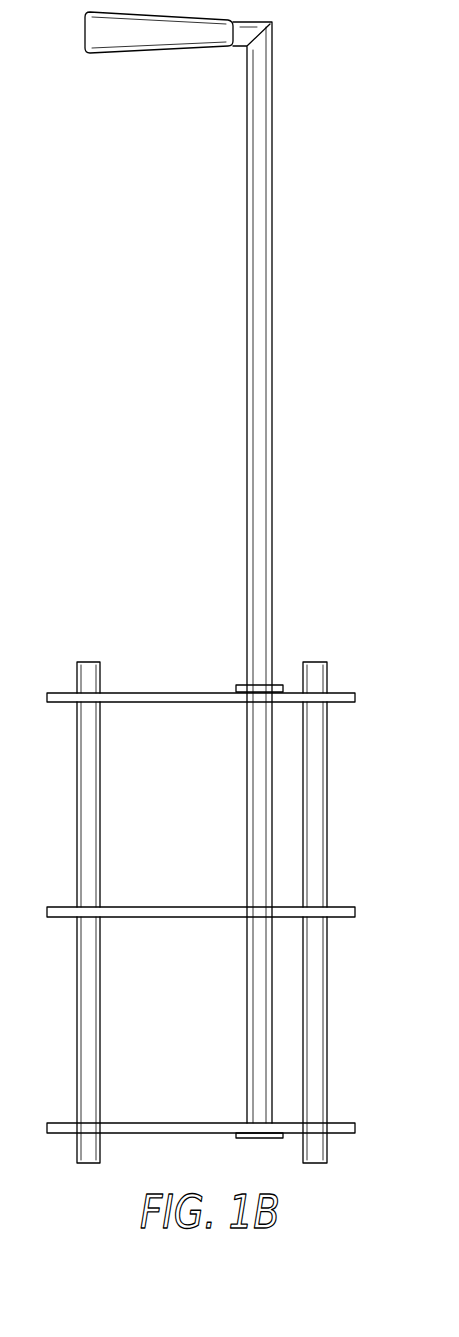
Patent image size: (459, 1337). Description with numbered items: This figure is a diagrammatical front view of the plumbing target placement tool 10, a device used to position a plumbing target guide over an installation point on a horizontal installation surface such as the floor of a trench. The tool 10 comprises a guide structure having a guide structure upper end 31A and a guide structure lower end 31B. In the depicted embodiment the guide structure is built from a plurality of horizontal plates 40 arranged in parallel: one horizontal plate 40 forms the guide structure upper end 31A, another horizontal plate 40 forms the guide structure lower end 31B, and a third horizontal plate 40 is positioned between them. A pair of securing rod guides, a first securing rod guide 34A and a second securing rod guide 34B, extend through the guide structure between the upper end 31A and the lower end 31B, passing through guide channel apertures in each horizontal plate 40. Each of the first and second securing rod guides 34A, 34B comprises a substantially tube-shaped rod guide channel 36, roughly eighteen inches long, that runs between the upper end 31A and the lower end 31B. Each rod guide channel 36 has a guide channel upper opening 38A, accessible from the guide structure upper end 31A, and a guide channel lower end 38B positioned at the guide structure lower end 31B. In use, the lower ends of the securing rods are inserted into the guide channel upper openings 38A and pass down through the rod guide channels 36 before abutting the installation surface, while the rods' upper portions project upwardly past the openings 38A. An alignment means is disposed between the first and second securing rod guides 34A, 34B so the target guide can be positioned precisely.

The plumbing target placement tool 10 is at (202, 587).
The guide structure upper end 31A is at (132, 658).
The guide structure lower end 31B is at (352, 1147).
The first securing rod guide 34A is at (77, 690).
The second securing rod guide 34B is at (328, 687).
The rod guide channel 36 is at (77, 787).
The guide channel upper opening 38A is at (88, 662).
The guide channel lower end 38B is at (318, 662).
The horizontal plate 40 is at (185, 692).